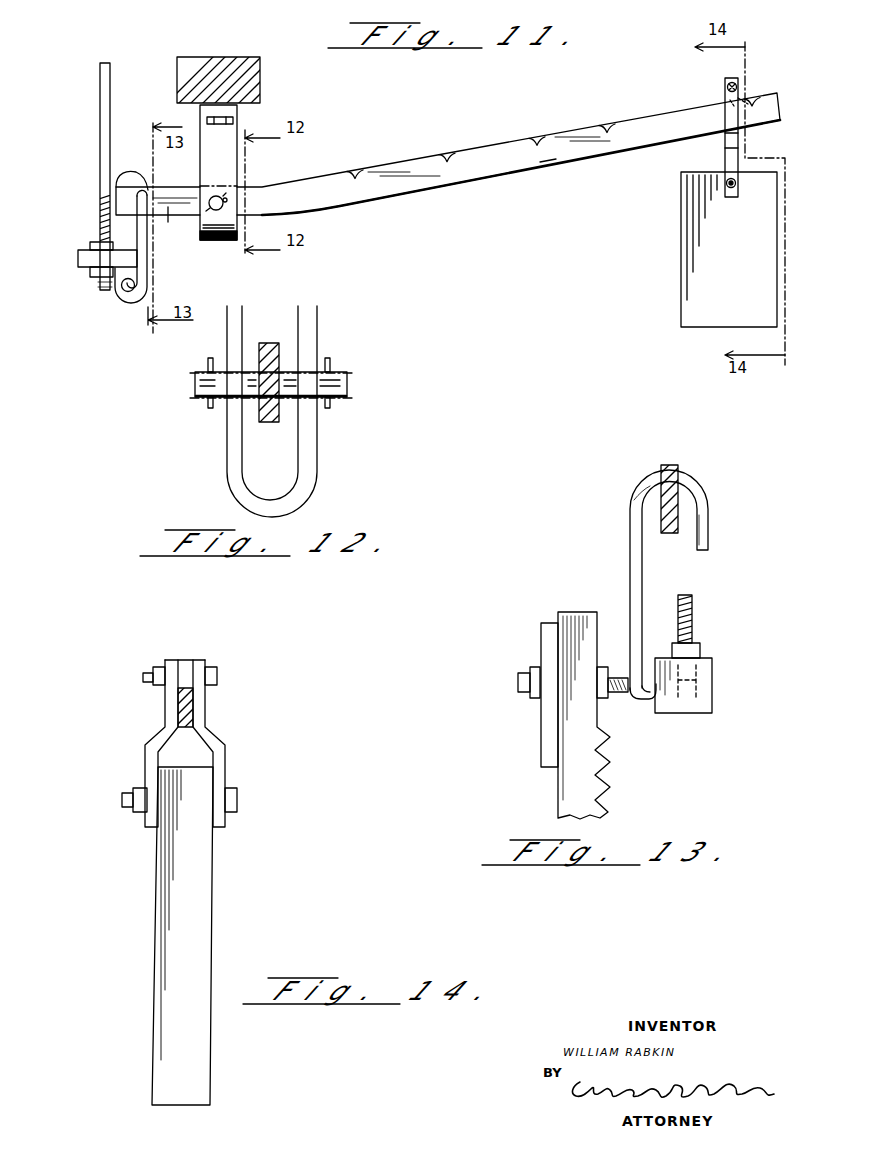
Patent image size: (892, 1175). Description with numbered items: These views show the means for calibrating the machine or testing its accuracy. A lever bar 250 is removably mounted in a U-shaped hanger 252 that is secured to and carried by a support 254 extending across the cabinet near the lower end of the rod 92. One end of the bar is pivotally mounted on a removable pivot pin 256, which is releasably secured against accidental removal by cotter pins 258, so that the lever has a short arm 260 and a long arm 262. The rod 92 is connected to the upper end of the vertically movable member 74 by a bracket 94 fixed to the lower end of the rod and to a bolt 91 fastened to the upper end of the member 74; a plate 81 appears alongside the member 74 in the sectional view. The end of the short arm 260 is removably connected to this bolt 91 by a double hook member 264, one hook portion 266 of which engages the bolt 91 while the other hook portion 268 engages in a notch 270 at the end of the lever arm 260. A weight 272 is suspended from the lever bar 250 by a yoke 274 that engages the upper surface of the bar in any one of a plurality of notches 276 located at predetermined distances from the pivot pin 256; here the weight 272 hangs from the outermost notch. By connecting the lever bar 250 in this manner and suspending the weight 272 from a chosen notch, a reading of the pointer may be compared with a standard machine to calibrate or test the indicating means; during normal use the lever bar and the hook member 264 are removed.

In FIG. 13, the movable member 74 is at (555, 790).
In FIG. 13, the mounting plate 81 is at (547, 740).
In FIG. 11, the bolt 91 is at (120, 292).
In FIG. 13, the bolt 91 is at (518, 682).
In FIG. 11, the rod 92 is at (100, 114).
In FIG. 13, the rod 92 is at (693, 602).
In FIG. 11, the bracket 94 is at (78, 262).
In FIG. 13, the bracket 94 is at (705, 682).
In FIG. 11, the lever bar 250 is at (462, 186).
In FIG. 12, the lever bar 250 is at (285, 348).
In FIG. 13, the lever bar 250 is at (681, 498).
In FIG. 11, the U-shaped hanger 252 is at (241, 125).
In FIG. 12, the U-shaped hanger 252 is at (318, 477).
In FIG. 11, the support 254 is at (250, 88).
In FIG. 11, the pivot pin 256 is at (222, 199).
In FIG. 12, the pivot pin 256 is at (348, 385).
In FIG. 11, the cotter pins 258 is at (229, 199).
In FIG. 12, the cotter pins 258 is at (332, 366).
In FIG. 11, the short arm 260 is at (176, 226).
In FIG. 11, the long arm 262 is at (547, 159).
In FIG. 14, the long arm 262 is at (193, 710).
In FIG. 11, the double hook member 264 is at (143, 245).
In FIG. 13, the double hook member 264 is at (628, 553).
In FIG. 13, the hook portion 266 is at (642, 703).
In FIG. 13, the hook portion 268 is at (708, 508).
In FIG. 11, the notch 270 is at (125, 173).
In FIG. 11, the weight 272 is at (681, 285).
In FIG. 14, the weight 272 is at (213, 857).
In FIG. 11, the yoke 274 is at (725, 95).
In FIG. 14, the yoke 274 is at (215, 752).
In FIG. 11, the notches 276 is at (447, 157).